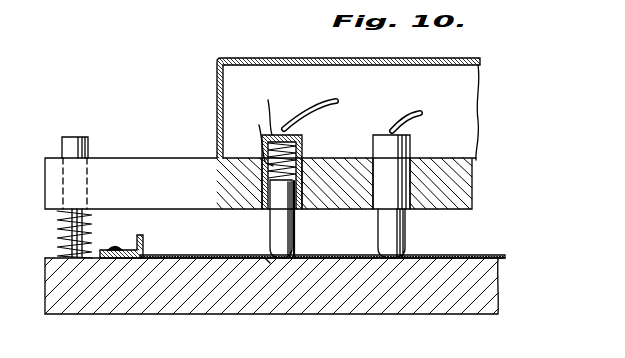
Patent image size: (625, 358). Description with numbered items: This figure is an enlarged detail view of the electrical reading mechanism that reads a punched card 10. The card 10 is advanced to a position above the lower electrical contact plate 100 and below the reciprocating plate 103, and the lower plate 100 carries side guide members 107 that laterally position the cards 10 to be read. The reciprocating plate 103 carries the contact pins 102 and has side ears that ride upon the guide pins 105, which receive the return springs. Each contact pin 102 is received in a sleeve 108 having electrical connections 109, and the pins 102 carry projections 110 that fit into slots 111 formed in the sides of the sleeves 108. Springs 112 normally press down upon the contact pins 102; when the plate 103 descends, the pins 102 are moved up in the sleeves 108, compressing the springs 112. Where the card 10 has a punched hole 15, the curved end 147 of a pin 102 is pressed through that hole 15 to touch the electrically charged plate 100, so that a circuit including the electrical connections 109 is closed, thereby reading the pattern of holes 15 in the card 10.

The card 10 is at (248, 257).
The punched holes 15 is at (296, 257).
The electrical contact plate 100 is at (360, 306).
The contact pins 102 is at (290, 231).
The reciprocating plate 103 is at (468, 71).
The guide pins 105 is at (88, 143).
The side guide members 107 is at (143, 238).
The sleeve 108 is at (305, 144).
The electrical connections 109 is at (306, 112).
The projections 110 is at (245, 160).
The slots 111 is at (255, 138).
The springs 112 is at (259, 107).
The curved ends 147 is at (268, 261).